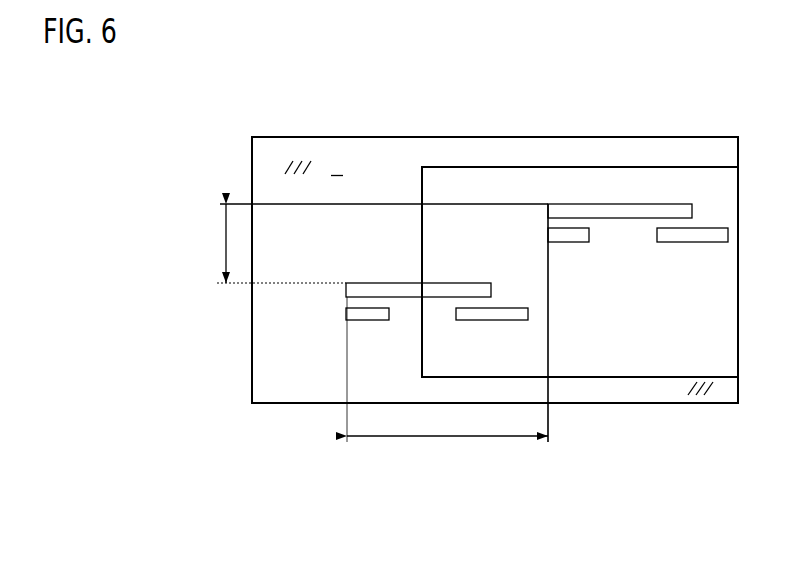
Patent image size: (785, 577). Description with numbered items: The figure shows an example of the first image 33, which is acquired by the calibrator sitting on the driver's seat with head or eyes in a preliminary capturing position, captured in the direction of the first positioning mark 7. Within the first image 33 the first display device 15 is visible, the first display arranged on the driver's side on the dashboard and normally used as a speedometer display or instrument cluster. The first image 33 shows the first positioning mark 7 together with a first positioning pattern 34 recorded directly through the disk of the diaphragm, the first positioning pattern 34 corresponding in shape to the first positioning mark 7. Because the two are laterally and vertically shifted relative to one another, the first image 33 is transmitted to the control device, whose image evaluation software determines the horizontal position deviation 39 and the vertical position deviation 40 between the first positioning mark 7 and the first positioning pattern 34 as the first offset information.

The first positioning mark 7 is at (392, 272).
The first display device 15 is at (586, 167).
The first image 33 is at (383, 137).
The first positioning pattern 34 is at (643, 253).
The horizontal position deviation 39 is at (440, 437).
The vertical position deviation 40 is at (222, 242).